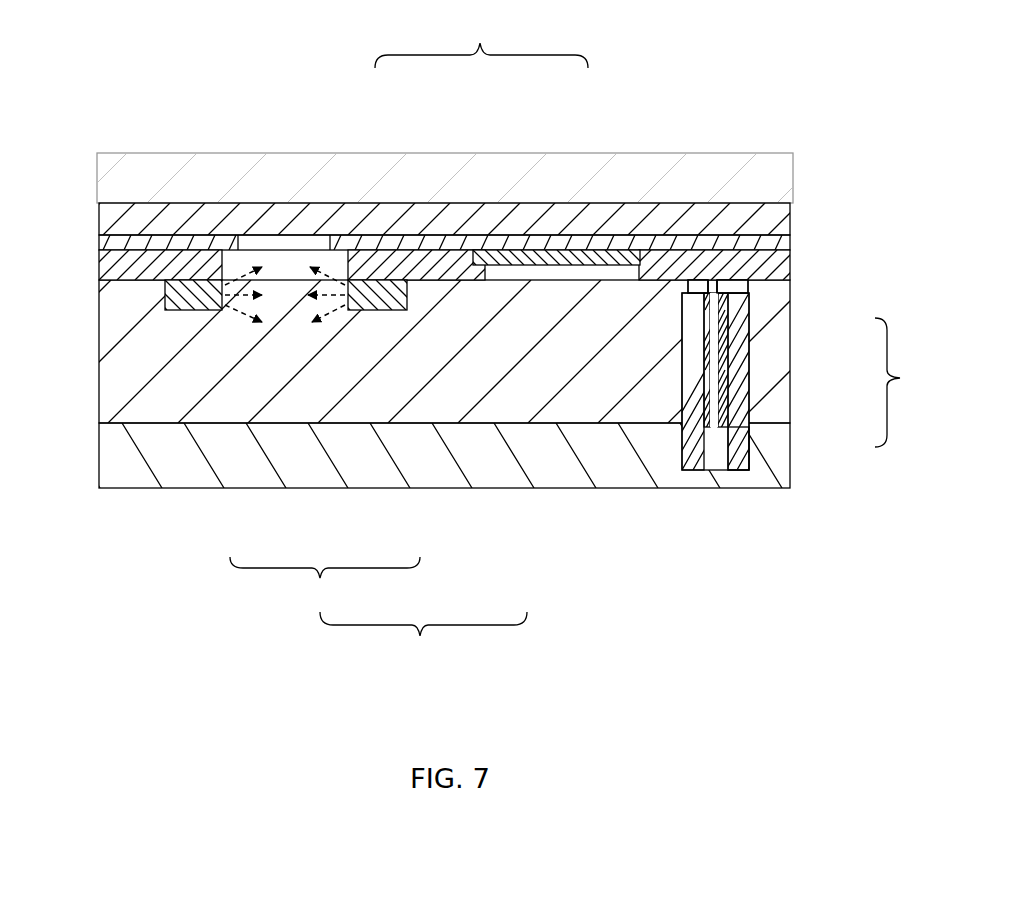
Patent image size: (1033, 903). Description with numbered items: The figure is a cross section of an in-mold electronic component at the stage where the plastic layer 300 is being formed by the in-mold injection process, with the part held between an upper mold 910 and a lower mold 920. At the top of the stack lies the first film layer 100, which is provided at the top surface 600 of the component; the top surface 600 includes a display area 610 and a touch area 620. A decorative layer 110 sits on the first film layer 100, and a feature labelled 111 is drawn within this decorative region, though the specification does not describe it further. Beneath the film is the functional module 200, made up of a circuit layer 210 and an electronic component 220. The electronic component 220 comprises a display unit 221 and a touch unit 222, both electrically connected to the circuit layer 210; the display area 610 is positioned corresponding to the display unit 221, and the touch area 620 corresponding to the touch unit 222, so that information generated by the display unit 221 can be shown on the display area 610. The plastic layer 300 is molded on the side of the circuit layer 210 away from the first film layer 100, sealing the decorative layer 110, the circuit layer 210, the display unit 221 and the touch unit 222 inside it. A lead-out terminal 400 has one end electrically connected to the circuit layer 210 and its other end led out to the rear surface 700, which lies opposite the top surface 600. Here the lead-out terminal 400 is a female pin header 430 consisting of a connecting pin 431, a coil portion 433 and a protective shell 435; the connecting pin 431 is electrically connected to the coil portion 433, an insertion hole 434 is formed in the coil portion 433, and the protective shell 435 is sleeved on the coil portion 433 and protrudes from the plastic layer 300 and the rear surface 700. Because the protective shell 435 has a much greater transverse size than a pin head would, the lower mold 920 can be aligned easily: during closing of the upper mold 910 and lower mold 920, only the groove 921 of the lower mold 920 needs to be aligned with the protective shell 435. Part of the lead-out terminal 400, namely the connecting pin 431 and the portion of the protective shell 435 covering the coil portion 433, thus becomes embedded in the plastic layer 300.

The first film layer 100 is at (718, 218).
The decorative layer 110 is at (765, 243).
The opening 111 is at (283, 247).
The functional module 200 is at (423, 642).
The circuit layer 210 is at (105, 266).
The electronic component 220 is at (325, 583).
The display unit 221 is at (187, 292).
The touch unit 222 is at (518, 257).
The plastic layer 300 is at (128, 367).
The lead-out terminal 400 is at (712, 415).
The pin header 430 is at (815, 375).
The connecting pin 431 is at (737, 285).
The coil portion 433 is at (725, 362).
The insertion hole 434 is at (718, 425).
The protective shell 435 is at (735, 460).
The top surface 600 is at (481, 38).
The display area 610 is at (300, 205).
The touch area 620 is at (537, 203).
The rear surface 700 is at (150, 425).
The upper mold 910 is at (651, 178).
The lower mold 920 is at (613, 458).
The groove 921 is at (742, 470).